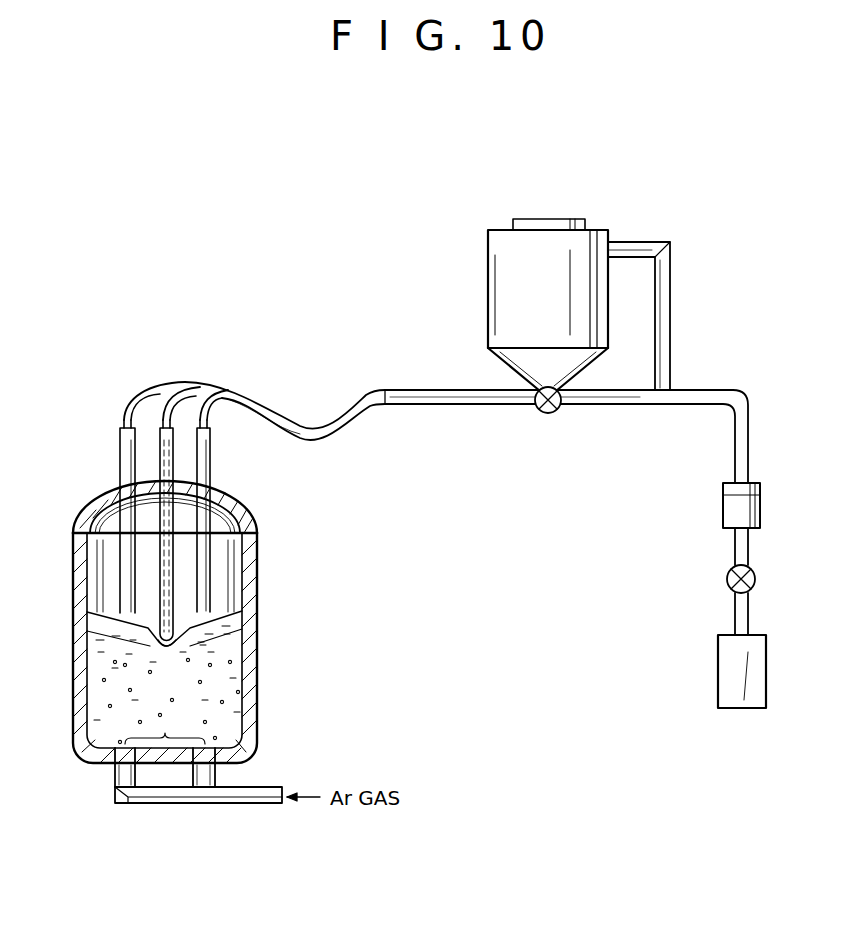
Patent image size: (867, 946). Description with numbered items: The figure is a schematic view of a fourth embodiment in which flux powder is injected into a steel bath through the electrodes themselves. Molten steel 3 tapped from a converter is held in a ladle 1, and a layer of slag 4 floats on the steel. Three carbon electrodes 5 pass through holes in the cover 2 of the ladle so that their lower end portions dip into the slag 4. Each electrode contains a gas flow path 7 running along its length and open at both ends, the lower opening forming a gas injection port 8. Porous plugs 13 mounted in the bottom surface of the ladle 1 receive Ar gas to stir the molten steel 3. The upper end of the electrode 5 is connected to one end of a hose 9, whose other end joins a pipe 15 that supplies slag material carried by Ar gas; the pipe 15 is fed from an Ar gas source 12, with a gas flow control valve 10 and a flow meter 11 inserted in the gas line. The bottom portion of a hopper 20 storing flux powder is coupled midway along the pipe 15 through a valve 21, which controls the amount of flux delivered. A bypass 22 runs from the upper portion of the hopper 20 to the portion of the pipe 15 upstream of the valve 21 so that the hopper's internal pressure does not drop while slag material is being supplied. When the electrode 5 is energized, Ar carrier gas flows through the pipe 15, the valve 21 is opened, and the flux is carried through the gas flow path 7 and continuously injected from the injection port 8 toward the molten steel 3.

The ladle 1 is at (258, 575).
The cover 2 is at (250, 511).
The molten steel 3 is at (238, 703).
The slag 4 is at (245, 620).
The electrodes 5 is at (128, 463).
The gas flow path 7 is at (176, 441).
The gas injection port 8 is at (167, 648).
The hose 9 is at (272, 403).
The gas flow control valve 10 is at (727, 580).
The flow meter 11 is at (723, 509).
The Ar gas source 12 is at (718, 675).
The porous plugs 13 is at (165, 748).
The pipe 15 is at (432, 407).
The hopper 20 is at (496, 228).
The valve 21 is at (548, 414).
The bypass 22 is at (671, 334).